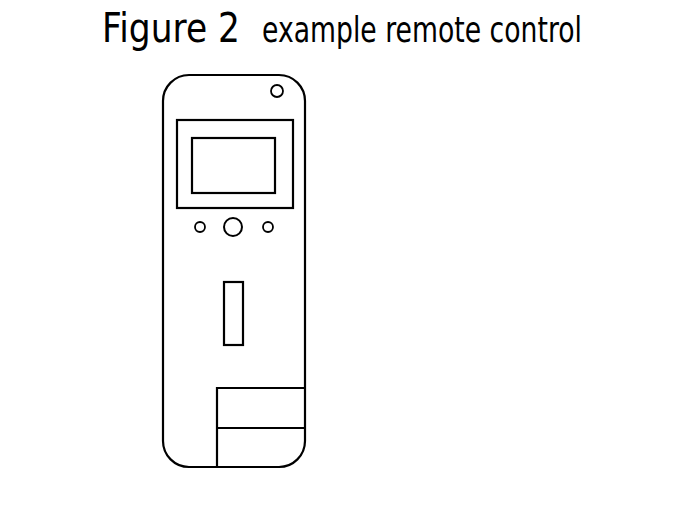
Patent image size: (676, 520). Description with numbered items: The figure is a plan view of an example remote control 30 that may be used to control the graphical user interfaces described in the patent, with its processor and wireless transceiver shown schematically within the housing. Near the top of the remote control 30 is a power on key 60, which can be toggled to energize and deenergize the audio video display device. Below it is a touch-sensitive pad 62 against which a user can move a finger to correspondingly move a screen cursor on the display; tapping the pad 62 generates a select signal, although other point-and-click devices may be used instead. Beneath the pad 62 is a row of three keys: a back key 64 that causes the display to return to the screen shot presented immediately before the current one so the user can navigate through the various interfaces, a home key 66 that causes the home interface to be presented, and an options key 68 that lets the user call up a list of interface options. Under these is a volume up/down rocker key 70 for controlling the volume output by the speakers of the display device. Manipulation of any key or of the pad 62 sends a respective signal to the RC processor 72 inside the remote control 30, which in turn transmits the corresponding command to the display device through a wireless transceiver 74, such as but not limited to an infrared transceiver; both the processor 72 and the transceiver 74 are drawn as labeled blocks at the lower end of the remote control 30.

The remote control 30 is at (122, 165).
The power on key 60 is at (283, 90).
The touch-sensitive pad 62 is at (275, 165).
The back key 64 is at (194, 227).
The home key 66 is at (224, 233).
The options key 68 is at (273, 227).
The volume up/down rocker key 70 is at (243, 307).
The RC processor 72 is at (305, 409).
The wireless transceiver 74 is at (305, 432).